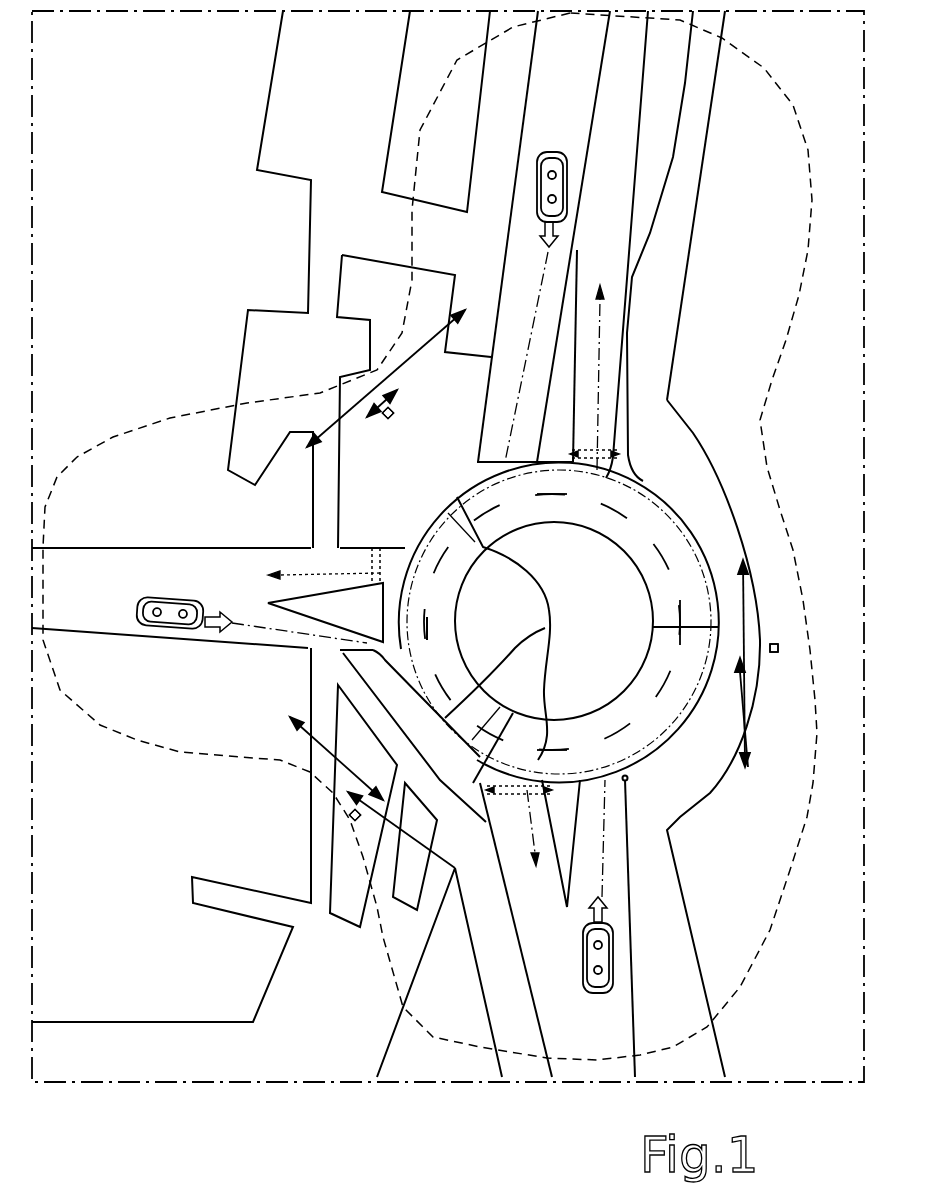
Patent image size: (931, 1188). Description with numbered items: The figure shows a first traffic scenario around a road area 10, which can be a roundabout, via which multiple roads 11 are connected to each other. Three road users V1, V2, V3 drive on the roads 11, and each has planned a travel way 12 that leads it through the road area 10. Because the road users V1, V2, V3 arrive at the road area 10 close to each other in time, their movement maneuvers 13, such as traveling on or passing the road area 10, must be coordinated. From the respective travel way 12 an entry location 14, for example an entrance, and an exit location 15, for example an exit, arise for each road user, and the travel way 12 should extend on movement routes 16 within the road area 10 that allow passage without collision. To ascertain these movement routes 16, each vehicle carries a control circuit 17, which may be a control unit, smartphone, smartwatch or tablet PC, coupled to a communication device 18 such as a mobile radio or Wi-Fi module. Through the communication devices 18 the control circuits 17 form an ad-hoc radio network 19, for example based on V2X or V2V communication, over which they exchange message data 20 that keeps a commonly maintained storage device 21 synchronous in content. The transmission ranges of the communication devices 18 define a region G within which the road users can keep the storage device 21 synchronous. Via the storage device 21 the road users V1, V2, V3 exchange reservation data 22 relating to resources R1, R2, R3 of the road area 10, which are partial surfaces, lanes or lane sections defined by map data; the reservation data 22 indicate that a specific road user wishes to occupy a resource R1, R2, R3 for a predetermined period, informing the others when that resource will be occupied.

The road area 10 is at (680, 537).
The road 11 is at (622, 103).
The travel way 12 is at (535, 283).
The movement maneuver 13 is at (545, 227).
The entry location 14 is at (476, 457).
The exit location 15 is at (615, 452).
The movement route 16 is at (553, 648).
The control circuit 17 is at (383, 574).
The communication device 18 is at (538, 185).
The ad-hoc radio network 19 is at (362, 378).
The message data 20 is at (388, 418).
The storage device 21 is at (580, 529).
The reservation data 22 is at (563, 732).
The region G is at (420, 162).
The road user V1 is at (583, 965).
The road user V2 is at (567, 183).
The road user V3 is at (212, 598).
The resource R1 is at (603, 749).
The resource R2 is at (607, 506).
The resource R3 is at (450, 610).